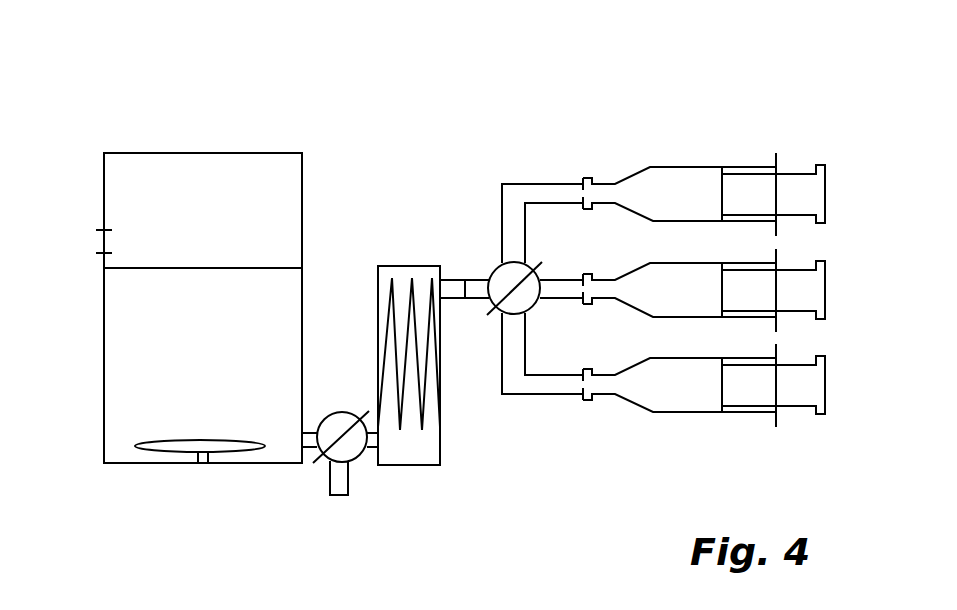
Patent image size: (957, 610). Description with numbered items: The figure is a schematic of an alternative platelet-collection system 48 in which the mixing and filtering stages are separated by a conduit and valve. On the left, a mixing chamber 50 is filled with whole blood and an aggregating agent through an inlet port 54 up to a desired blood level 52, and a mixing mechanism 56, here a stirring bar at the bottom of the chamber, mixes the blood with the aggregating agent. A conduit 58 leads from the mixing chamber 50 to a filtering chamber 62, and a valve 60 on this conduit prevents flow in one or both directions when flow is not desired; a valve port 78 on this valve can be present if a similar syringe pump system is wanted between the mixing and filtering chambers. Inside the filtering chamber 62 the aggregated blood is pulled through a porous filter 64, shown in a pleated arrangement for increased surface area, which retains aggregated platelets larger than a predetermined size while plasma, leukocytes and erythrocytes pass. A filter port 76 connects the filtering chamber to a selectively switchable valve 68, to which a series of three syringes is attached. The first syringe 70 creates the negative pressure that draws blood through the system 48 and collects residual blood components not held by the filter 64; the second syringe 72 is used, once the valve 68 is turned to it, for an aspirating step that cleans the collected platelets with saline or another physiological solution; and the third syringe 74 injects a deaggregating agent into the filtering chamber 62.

The system 48 is at (190, 116).
The mixing chamber 50 is at (235, 153).
The blood level 52 is at (143, 268).
The inlet port 54 is at (96, 229).
The mixing mechanism 56 is at (168, 449).
The conduit 58 is at (310, 450).
The valve 60 is at (332, 423).
The filtering chamber 62 is at (440, 464).
The porous filter 64 is at (425, 406).
The valve 68 is at (499, 280).
The first syringe 70 is at (632, 195).
The second syringe 72 is at (665, 290).
The third syringe 74 is at (685, 395).
The filter port 76 is at (449, 280).
The valve port 78 is at (348, 480).